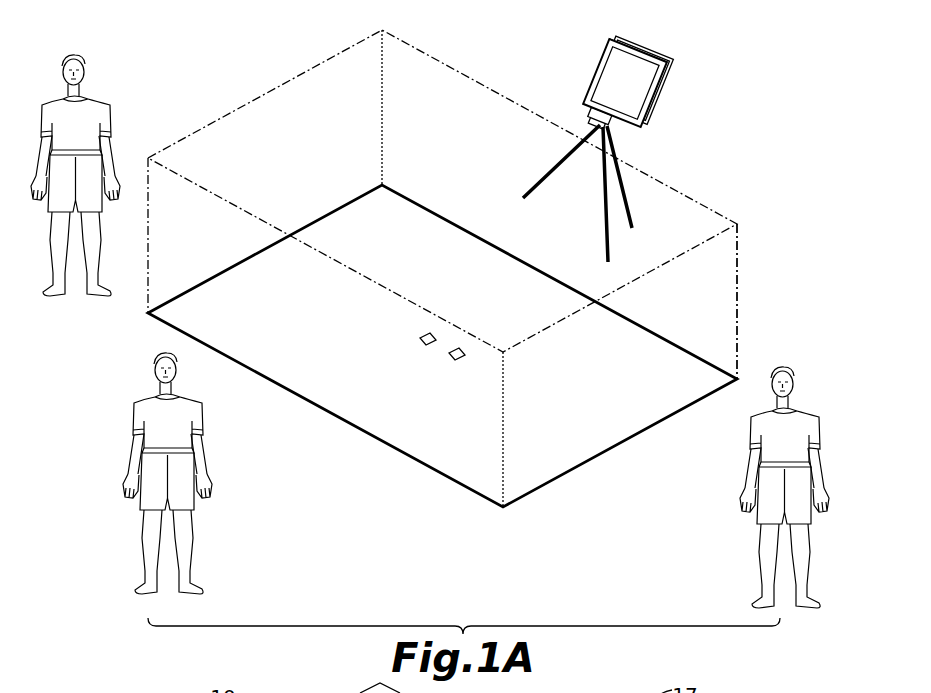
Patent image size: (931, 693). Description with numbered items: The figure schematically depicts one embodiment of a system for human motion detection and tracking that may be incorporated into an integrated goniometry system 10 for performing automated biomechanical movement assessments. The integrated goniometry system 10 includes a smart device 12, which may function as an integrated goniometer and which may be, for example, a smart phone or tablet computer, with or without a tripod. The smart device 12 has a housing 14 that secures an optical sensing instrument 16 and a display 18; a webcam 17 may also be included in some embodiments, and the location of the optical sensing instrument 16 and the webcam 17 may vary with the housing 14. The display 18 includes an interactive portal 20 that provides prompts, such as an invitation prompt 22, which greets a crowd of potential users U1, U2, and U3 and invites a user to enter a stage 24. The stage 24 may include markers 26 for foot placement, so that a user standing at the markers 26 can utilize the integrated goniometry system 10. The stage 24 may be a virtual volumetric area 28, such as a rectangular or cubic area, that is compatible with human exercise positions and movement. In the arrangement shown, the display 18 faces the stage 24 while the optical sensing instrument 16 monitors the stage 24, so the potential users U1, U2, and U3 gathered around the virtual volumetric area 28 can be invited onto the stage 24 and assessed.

The integrated goniometry system 10 is at (256, 80).
The smart device 12 is at (643, 136).
The housing 14 is at (660, 78).
The optical sensing instrument 16 is at (638, 130).
The webcam 17 is at (638, 50).
The display 18 is at (614, 64).
The interactive portal 20 is at (603, 87).
The invitation prompt 22 is at (655, 58).
The stage 24 is at (355, 402).
The markers 26 is at (452, 360).
The virtual volumetric area 28 is at (738, 277).
The potential user U1 is at (108, 108).
The potential user U2 is at (200, 409).
The potential user U3 is at (816, 420).